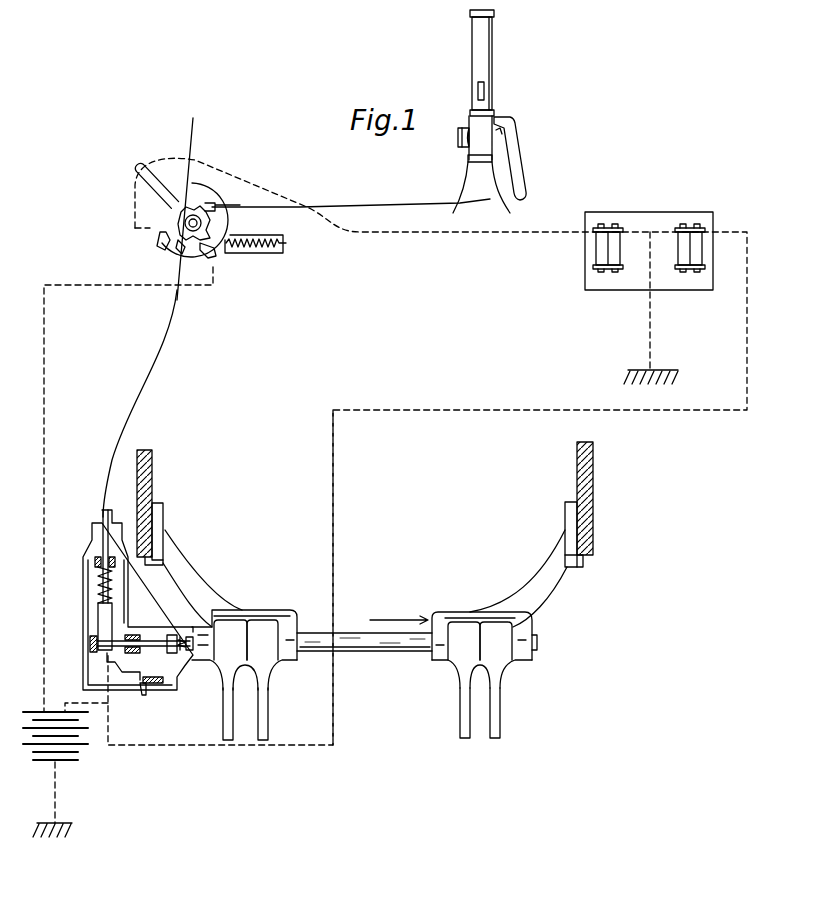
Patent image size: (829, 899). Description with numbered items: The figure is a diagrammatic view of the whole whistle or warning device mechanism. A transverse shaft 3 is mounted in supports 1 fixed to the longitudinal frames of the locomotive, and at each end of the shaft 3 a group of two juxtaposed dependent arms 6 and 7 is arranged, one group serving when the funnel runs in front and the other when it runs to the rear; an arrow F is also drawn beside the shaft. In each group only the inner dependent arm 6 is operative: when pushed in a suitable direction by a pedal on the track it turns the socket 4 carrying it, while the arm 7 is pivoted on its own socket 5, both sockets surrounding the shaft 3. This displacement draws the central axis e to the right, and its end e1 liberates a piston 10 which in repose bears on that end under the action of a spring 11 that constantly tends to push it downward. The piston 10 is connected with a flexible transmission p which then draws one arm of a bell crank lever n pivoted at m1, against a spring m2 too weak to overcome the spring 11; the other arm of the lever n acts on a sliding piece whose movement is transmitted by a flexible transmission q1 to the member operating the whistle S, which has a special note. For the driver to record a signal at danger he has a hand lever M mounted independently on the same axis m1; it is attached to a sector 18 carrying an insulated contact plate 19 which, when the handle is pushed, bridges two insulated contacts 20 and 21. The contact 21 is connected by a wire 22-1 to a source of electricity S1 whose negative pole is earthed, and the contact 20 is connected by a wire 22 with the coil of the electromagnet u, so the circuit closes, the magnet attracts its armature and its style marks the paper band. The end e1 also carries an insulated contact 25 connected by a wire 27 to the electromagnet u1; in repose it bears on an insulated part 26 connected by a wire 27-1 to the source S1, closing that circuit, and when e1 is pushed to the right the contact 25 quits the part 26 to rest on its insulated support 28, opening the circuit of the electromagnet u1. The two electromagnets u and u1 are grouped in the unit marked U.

The whistle S is at (483, 72).
The source of electricity S1 is at (66, 748).
The flexible transmission q1 is at (390, 207).
The wire 22 is at (487, 233).
The wire 22-1 is at (70, 288).
The hand lever M is at (153, 180).
The axis m1 is at (197, 220).
The spring m2 is at (255, 250).
The bell crank lever n is at (187, 196).
The contact plate 19 is at (220, 215).
The insulated contact 20 is at (160, 246).
The sector 18 is at (183, 247).
The insulated contact 21 is at (212, 252).
The flexible transmission p is at (155, 368).
The supports 1 is at (158, 540).
The piston 10 is at (105, 627).
The spring 11 is at (98, 588).
The central axis e is at (184, 640).
The end of central axis e1 is at (105, 647).
The insulated contact 25 is at (142, 677).
The insulated support 28 is at (165, 680).
The insulated part 26 is at (148, 688).
The wire 27 is at (333, 540).
The wire 27-1 is at (97, 705).
The socket 5 is at (364, 650).
The socket 4 is at (470, 640).
The dependent arm 7 is at (228, 712).
The dependent arm 6 is at (263, 710).
The transverse shaft 3 is at (377, 645).
The direction of force F is at (399, 606).
The relay U is at (649, 241).
The electromagnet u is at (600, 246).
The electromagnet u1 is at (700, 251).